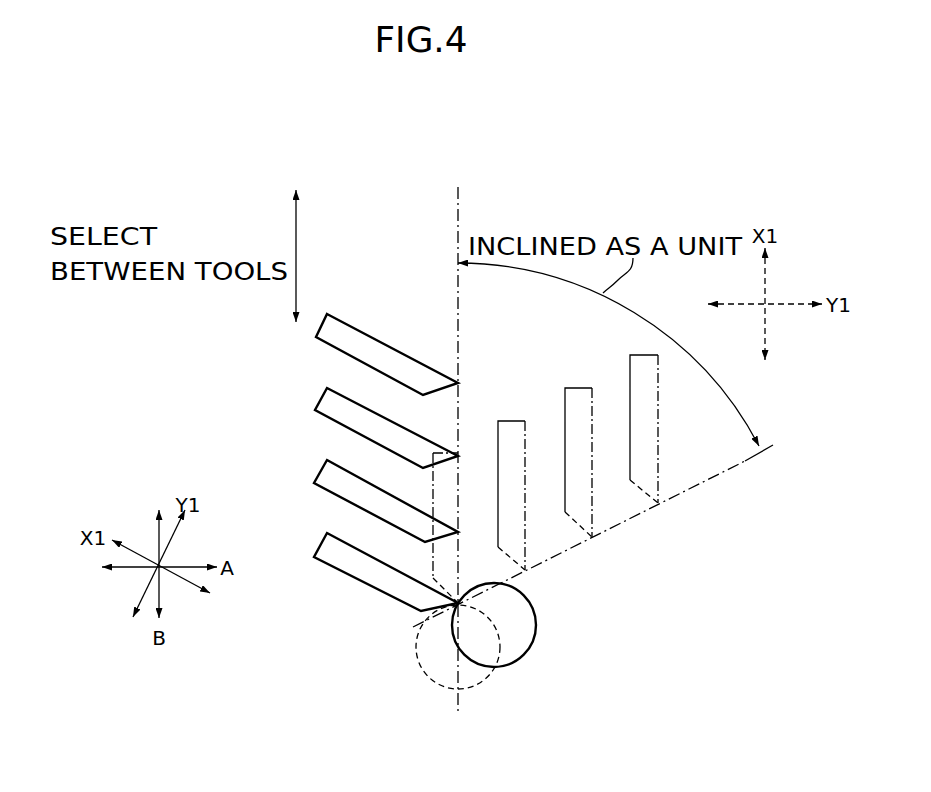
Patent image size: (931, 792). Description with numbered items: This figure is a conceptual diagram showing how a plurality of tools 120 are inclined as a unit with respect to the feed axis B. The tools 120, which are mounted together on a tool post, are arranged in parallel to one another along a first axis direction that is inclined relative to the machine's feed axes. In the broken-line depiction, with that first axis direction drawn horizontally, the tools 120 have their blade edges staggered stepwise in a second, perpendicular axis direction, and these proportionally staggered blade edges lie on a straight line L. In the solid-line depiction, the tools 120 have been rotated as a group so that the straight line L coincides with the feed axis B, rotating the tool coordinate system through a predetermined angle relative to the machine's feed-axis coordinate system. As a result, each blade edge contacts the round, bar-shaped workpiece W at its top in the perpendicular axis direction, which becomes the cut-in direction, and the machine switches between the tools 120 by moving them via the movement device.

The tools 120 is at (332, 338).
The workpiece W is at (417, 655).
The straight line L is at (698, 483).
The second feed axis B is at (459, 436).